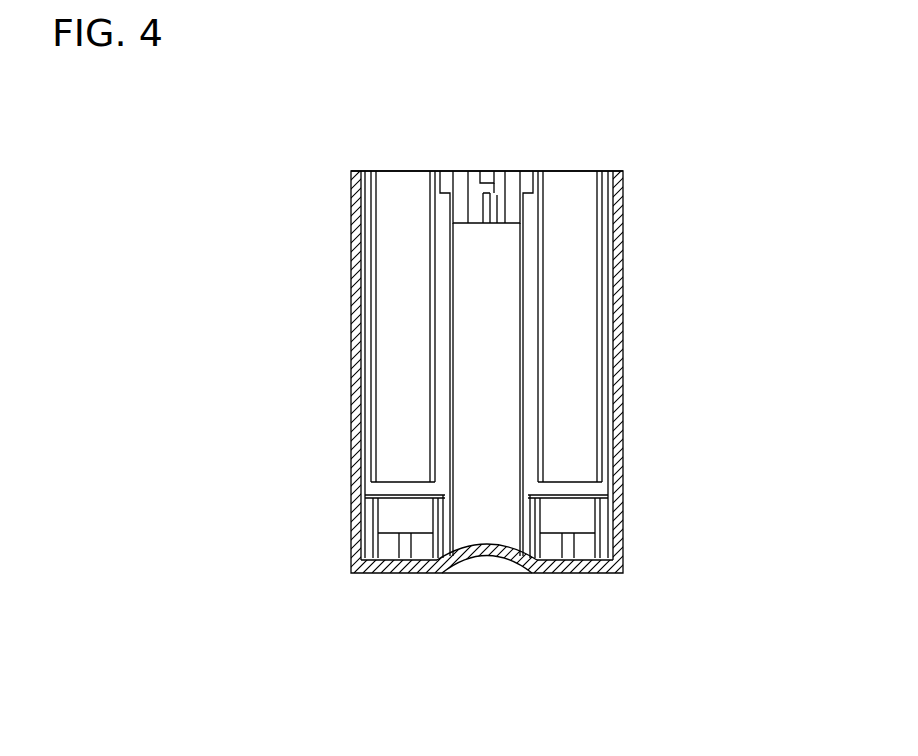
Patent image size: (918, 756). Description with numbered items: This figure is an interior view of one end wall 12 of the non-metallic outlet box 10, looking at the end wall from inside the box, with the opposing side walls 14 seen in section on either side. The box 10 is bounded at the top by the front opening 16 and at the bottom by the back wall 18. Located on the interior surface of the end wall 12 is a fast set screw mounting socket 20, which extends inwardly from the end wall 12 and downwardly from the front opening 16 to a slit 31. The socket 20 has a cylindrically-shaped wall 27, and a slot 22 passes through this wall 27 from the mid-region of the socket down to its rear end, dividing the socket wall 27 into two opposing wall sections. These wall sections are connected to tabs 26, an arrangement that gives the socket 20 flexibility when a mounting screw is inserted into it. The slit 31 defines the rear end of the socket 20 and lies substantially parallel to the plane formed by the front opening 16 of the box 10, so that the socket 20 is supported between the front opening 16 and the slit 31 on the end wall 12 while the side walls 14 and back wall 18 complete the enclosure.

The non-metallic outlet box 10 is at (680, 451).
The end wall 12 is at (405, 357).
The side wall 14 is at (350, 433).
The front opening 16 is at (592, 169).
The back wall 18 is at (545, 568).
The fast set screw mounting socket 20 is at (487, 184).
The slot 22 is at (482, 214).
The tab 26 is at (458, 212).
The cylindrically-shaped wall 27 is at (496, 196).
The slit 31 is at (455, 268).